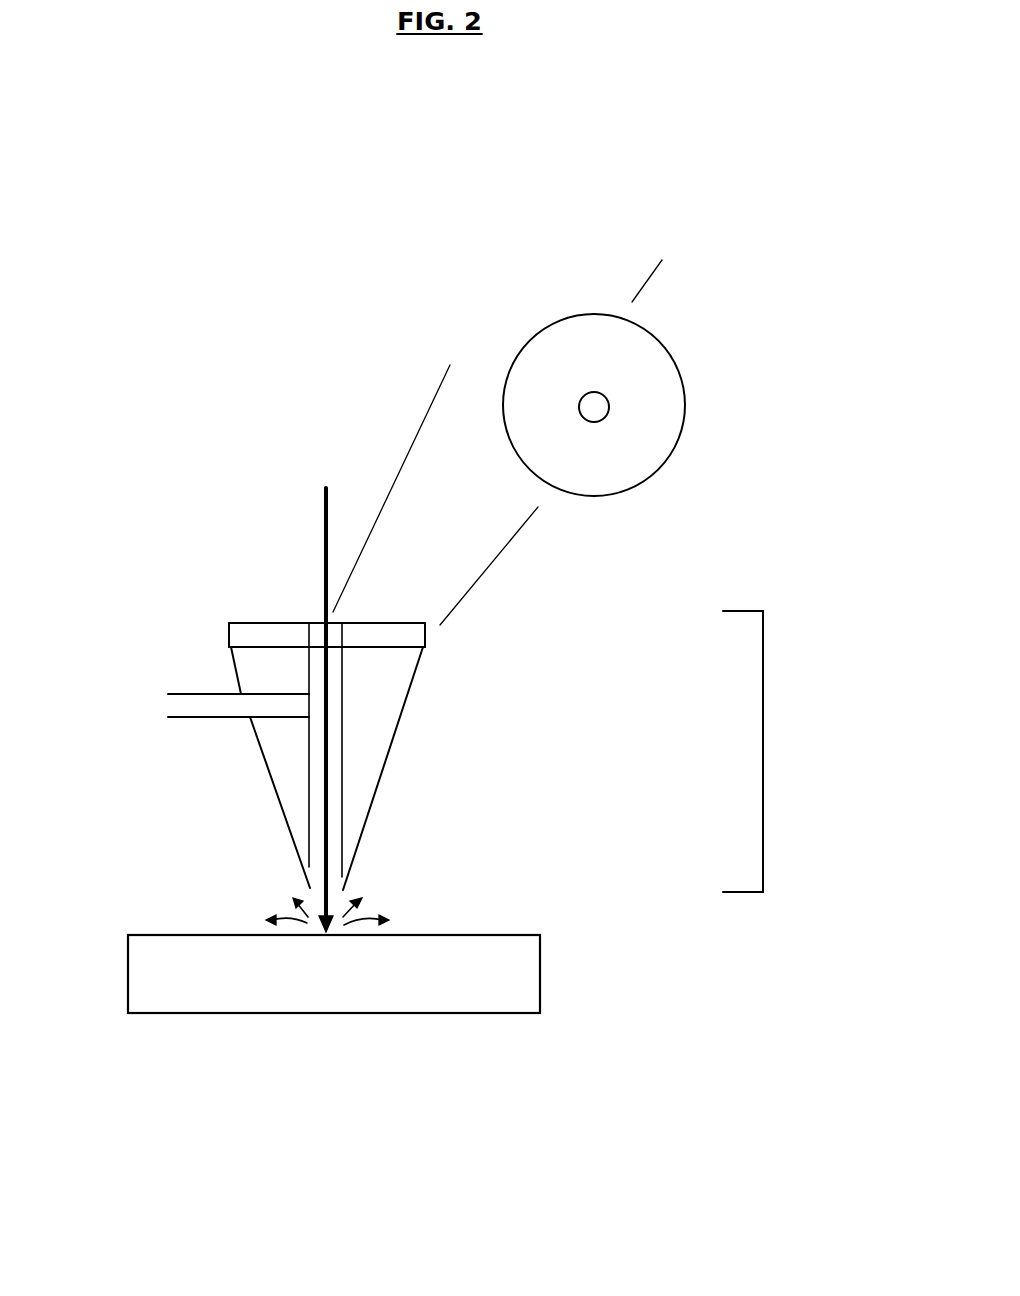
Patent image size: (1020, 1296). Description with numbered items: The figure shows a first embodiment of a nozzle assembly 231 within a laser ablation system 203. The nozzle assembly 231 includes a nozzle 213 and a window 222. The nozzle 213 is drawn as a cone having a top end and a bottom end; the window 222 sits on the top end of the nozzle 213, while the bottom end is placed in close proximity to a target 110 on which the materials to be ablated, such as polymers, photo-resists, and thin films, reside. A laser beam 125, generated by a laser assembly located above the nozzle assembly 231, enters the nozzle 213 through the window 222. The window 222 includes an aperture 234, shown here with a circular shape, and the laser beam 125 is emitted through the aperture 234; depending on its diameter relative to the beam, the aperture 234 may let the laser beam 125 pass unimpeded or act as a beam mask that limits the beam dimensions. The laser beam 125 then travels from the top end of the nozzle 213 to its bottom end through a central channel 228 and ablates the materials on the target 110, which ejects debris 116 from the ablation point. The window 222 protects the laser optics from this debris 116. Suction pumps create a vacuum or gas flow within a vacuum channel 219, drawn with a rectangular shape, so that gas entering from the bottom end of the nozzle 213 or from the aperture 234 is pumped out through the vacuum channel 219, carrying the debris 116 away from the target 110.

The laser ablation system 203 is at (498, 1199).
The aperture 234 is at (570, 390).
The laser beam 125 is at (353, 472).
The window 222 is at (208, 631).
The central channel 228 is at (333, 710).
The vacuum channel 219 is at (209, 705).
The nozzle 213 is at (528, 782).
The nozzle assembly 231 is at (866, 774).
The debris 116 is at (445, 899).
The target 110 is at (354, 1001).